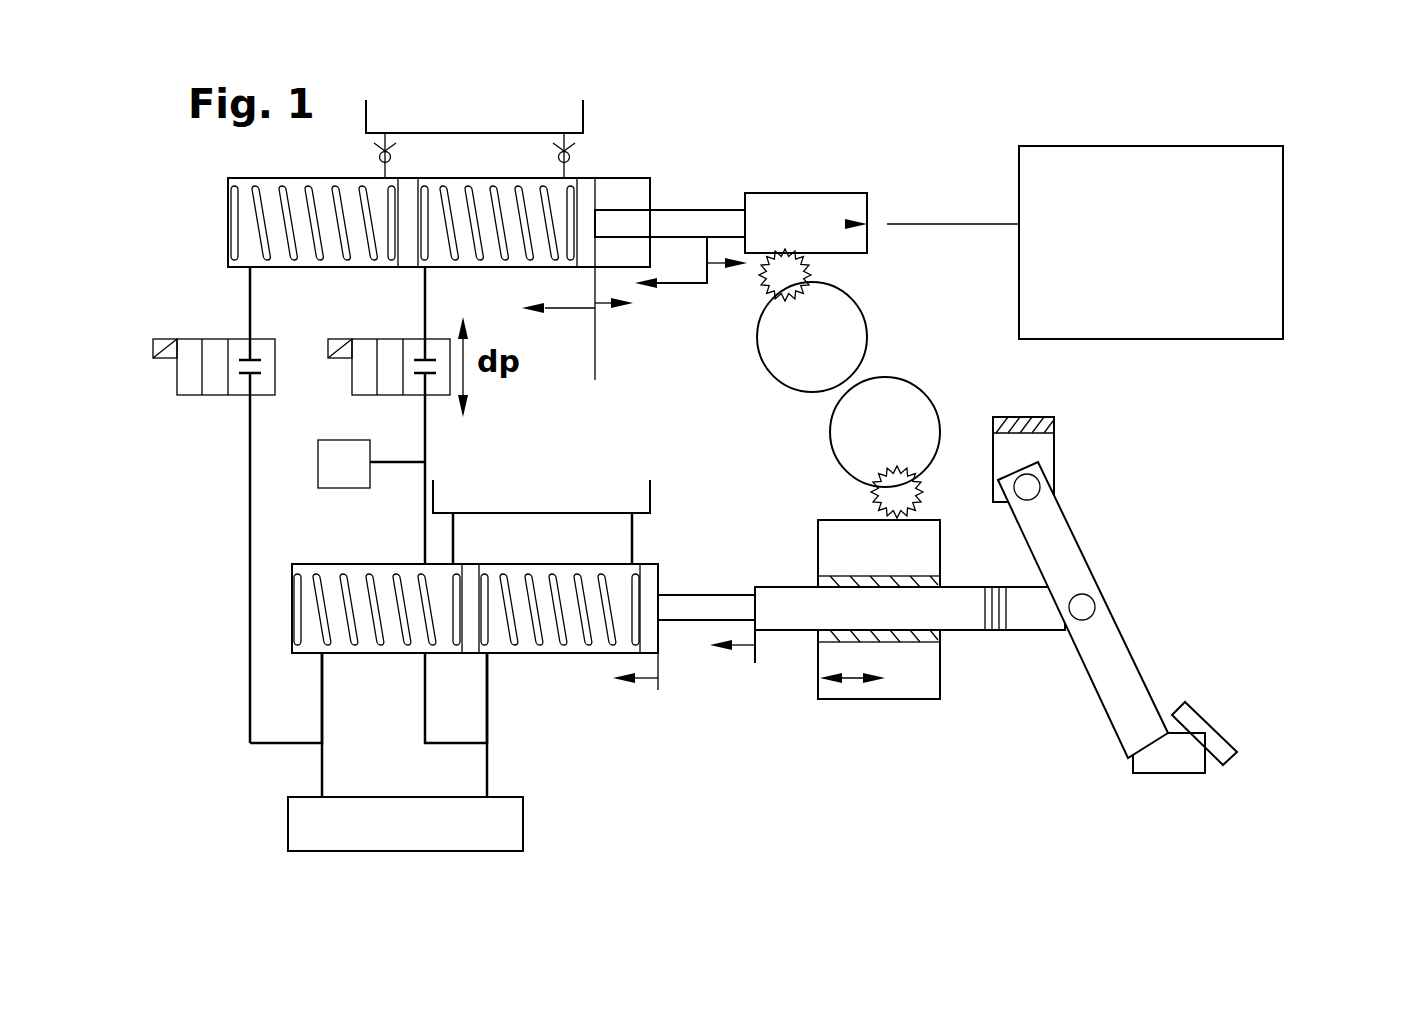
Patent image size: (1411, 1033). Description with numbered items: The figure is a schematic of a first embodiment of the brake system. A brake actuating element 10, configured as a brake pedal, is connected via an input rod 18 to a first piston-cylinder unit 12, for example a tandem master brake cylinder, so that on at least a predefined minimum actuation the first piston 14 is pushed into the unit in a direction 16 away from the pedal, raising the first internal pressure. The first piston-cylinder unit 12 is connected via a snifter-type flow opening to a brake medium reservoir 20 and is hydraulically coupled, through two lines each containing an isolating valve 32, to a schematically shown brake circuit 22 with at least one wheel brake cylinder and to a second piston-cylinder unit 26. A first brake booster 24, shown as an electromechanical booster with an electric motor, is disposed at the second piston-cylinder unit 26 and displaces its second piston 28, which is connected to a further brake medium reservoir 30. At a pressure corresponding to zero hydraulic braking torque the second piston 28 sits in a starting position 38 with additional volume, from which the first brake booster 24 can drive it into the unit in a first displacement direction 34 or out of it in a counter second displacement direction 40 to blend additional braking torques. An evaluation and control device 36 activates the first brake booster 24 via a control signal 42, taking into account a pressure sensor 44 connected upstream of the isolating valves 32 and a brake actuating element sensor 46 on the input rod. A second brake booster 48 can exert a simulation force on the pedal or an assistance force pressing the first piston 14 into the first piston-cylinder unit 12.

The brake actuating element 10 is at (1110, 647).
The first piston-cylinder unit 12 is at (550, 643).
The first piston 14 is at (733, 608).
The direction 16 is at (643, 680).
The input rod 18 is at (781, 621).
The brake medium reservoir 20 is at (650, 492).
The brake circuit 22 is at (503, 822).
The first brake booster 24 is at (855, 196).
The second piston-cylinder unit 26 is at (618, 260).
The second piston 28 is at (618, 220).
The further brake medium reservoir 30 is at (585, 110).
The isolating valve 32 is at (243, 343).
The first displacement direction 34 is at (567, 310).
The evaluation and control device 36 is at (1267, 240).
The starting position 38 is at (595, 373).
The second displacement direction 40 is at (603, 305).
The control signal 42 is at (971, 220).
The pressure sensor 44 is at (327, 480).
The brake actuating element sensor 46 is at (1000, 633).
The second brake booster 48 is at (908, 683).